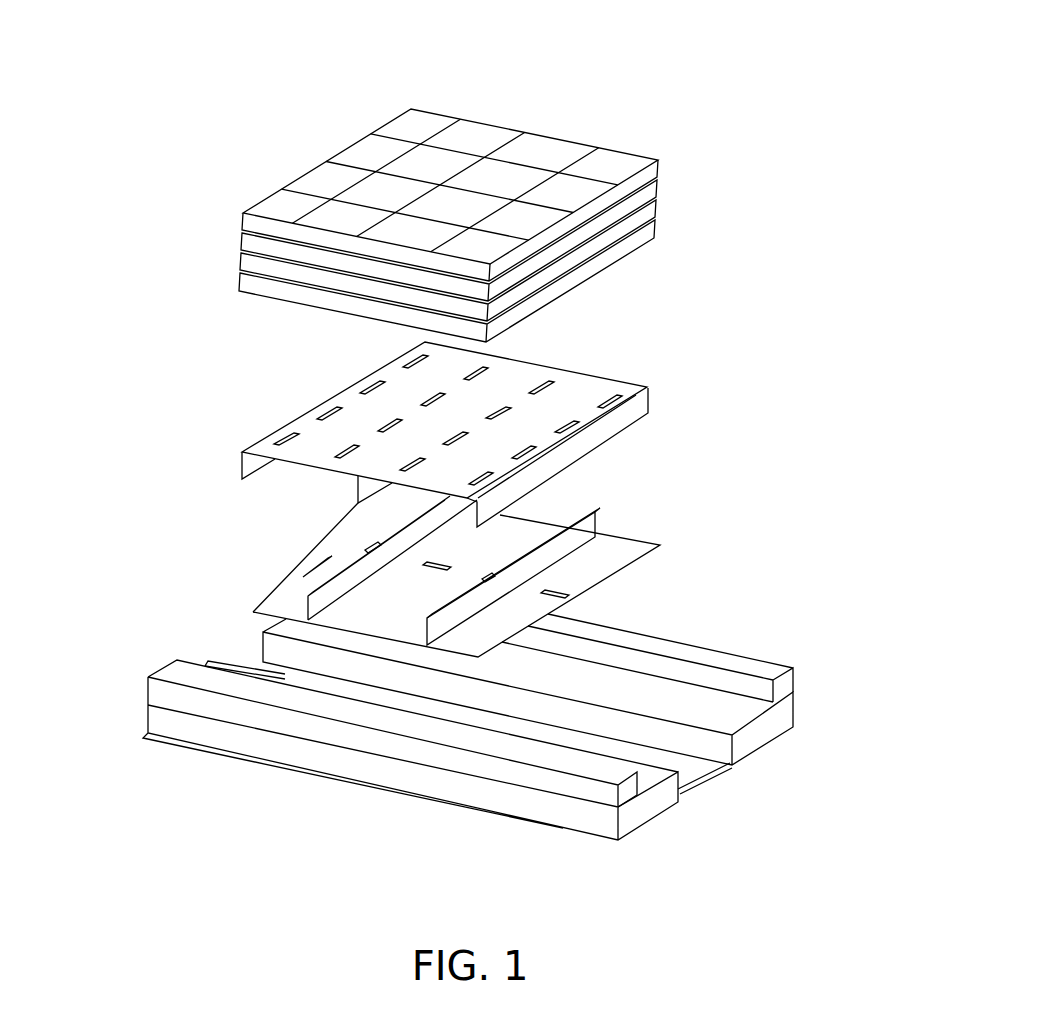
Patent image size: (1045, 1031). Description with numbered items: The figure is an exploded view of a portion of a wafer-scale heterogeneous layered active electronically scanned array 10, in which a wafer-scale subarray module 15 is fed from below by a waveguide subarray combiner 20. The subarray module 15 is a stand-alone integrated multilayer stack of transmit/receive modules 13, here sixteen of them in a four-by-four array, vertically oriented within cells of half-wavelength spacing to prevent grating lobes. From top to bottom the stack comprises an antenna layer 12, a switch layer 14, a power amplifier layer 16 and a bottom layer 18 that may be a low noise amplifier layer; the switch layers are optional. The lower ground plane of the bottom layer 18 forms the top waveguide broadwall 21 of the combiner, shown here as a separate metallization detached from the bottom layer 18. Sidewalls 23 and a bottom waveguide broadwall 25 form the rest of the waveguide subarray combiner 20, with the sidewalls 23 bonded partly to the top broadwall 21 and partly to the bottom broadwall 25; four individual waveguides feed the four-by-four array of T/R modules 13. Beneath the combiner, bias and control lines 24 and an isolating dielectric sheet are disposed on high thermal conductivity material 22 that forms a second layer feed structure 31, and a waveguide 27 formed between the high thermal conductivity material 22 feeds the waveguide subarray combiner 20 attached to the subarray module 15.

The wafer-scale heterogeneous layered active electronically scanned array 10 is at (850, 263).
The antenna layer 12 is at (308, 182).
The transmit/receive (T/R) modules 13 is at (423, 125).
The switch 2 layer 14 is at (250, 240).
The wafer-scale subarray module 15 is at (698, 140).
The power amplifier (PA) layer 16 is at (257, 262).
The bottom layer 18 is at (305, 290).
The waveguide subarray combiner 20 is at (336, 493).
The top waveguide broadwall 21 is at (607, 388).
The sidewalls 23 is at (240, 466).
The bottom waveguide broadwall 25 is at (627, 572).
The bias/control lines 24 is at (167, 672).
The high thermal conductivity material 22 is at (648, 805).
The waveguide 27 is at (270, 668).
The second layer feed structure 31 is at (314, 796).